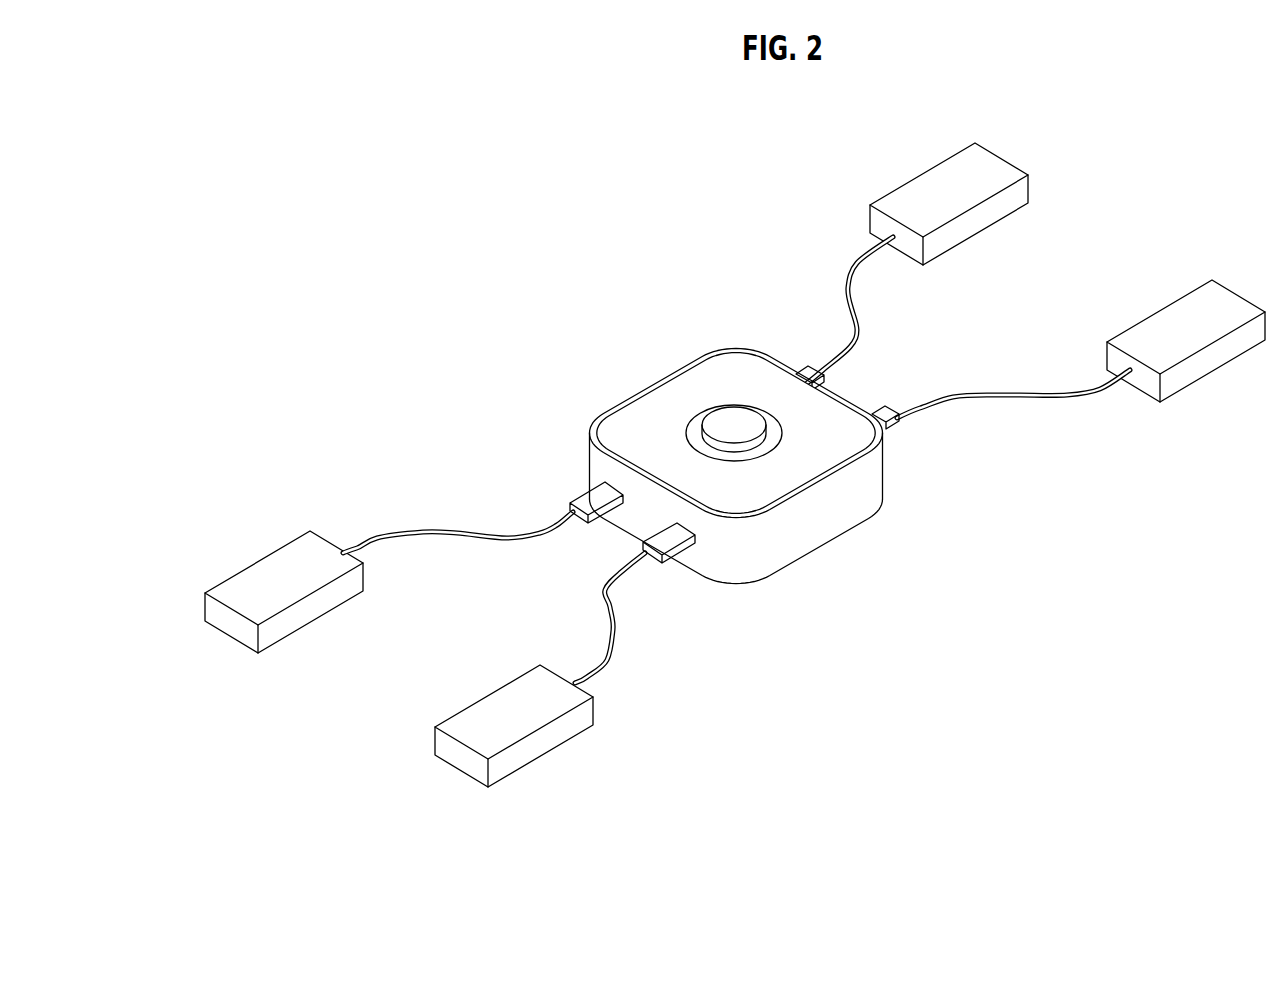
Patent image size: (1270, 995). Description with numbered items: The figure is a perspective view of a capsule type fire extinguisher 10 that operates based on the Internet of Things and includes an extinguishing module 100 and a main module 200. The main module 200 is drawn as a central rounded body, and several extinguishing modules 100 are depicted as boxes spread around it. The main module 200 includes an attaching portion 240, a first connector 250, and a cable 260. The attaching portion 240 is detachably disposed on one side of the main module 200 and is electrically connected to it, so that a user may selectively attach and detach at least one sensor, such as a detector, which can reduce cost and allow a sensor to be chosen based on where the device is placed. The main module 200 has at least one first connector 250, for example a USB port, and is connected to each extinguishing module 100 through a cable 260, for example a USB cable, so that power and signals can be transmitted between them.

The capsule type fire extinguisher 10 is at (561, 255).
The extinguishing module 100 is at (1010, 150).
The main module 200 is at (740, 480).
The attaching portion 240 is at (740, 428).
The first connector 250 is at (676, 563).
The cable 260 is at (617, 660).